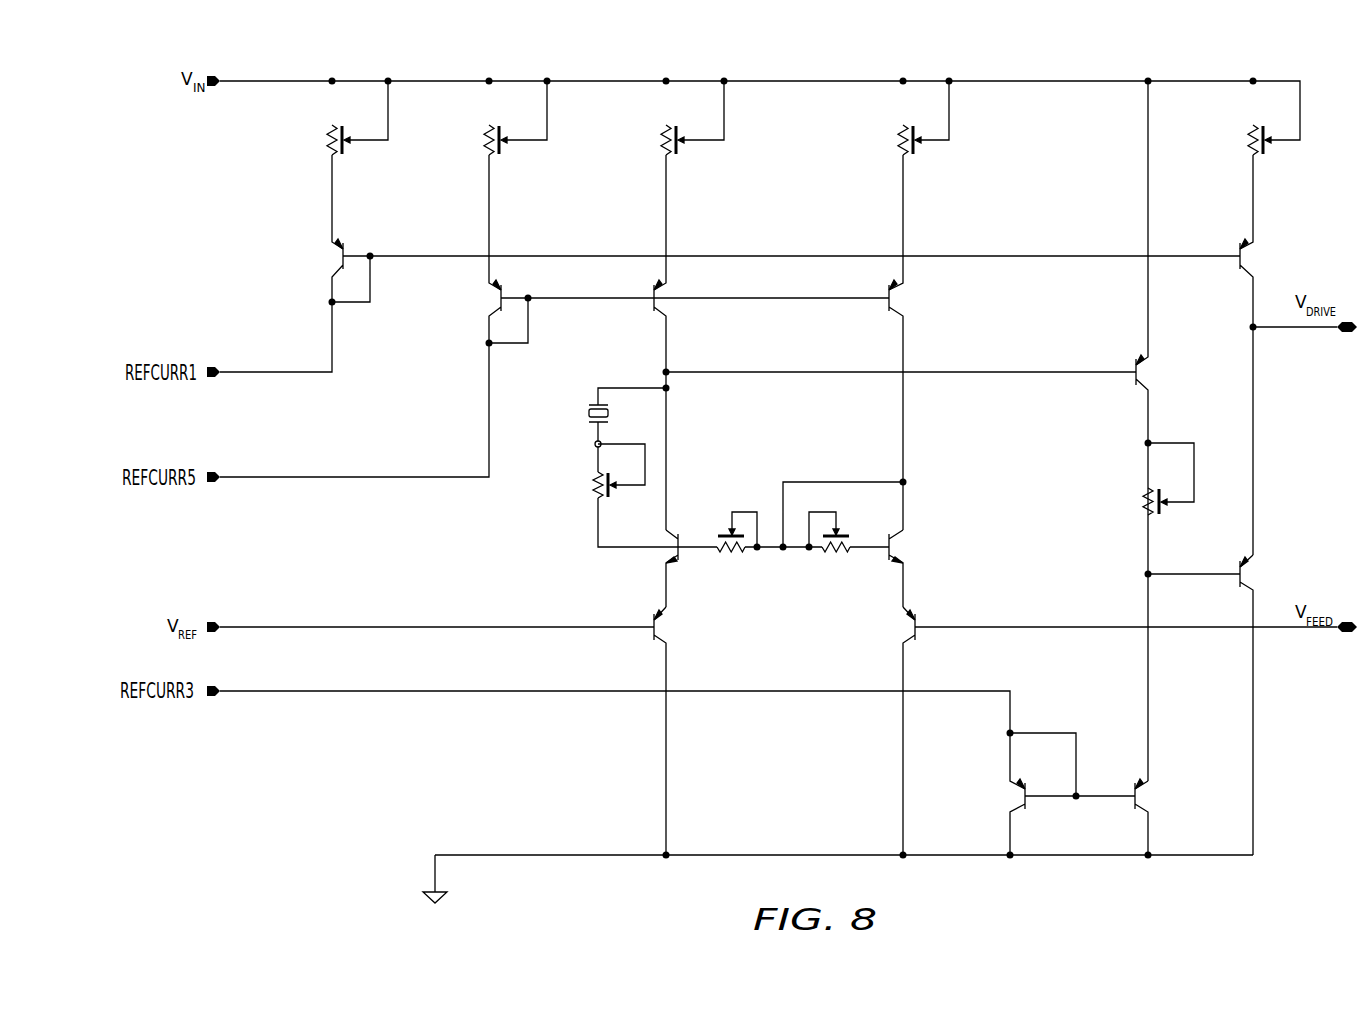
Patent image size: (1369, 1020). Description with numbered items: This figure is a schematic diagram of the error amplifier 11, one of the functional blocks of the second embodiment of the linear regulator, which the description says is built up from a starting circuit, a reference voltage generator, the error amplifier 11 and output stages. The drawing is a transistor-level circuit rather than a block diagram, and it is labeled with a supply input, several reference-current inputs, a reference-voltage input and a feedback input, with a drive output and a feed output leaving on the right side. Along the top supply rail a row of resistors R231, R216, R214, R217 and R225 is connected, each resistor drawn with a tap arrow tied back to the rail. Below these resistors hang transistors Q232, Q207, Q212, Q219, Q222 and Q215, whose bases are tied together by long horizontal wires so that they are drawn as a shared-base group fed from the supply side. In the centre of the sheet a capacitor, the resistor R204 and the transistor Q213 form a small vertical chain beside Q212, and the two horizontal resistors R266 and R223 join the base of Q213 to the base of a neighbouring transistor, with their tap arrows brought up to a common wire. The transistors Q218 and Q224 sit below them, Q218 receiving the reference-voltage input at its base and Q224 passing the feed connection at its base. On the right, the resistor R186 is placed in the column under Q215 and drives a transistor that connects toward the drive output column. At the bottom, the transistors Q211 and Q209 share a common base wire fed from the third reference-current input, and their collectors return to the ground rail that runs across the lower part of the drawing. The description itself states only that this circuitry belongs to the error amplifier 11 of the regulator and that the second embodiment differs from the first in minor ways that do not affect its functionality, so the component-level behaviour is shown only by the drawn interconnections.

The error amplifier 11 is at (560, 67).
The resistor R231 is at (335, 118).
The resistor R216 is at (493, 118).
The resistor R214 is at (669, 118).
The resistor R217 is at (901, 118).
The resistor R225 is at (1236, 140).
The resistor R204 is at (582, 485).
The resistor R186 is at (1132, 501).
The resistor R266 is at (731, 557).
The resistor R223 is at (841, 557).
The transistor Q232 is at (330, 228).
The transistor Q207 is at (487, 249).
The transistor Q212 is at (643, 342).
The transistor Q219 is at (881, 342).
The transistor Q222 is at (1231, 355).
The transistor Q215 is at (1126, 431).
The transistor Q213 is at (688, 557).
The transistor Q218 is at (642, 717).
The transistor Q224 is at (887, 721).
The transistor Q211 is at (1036, 794).
The transistor Q209 is at (1125, 805).